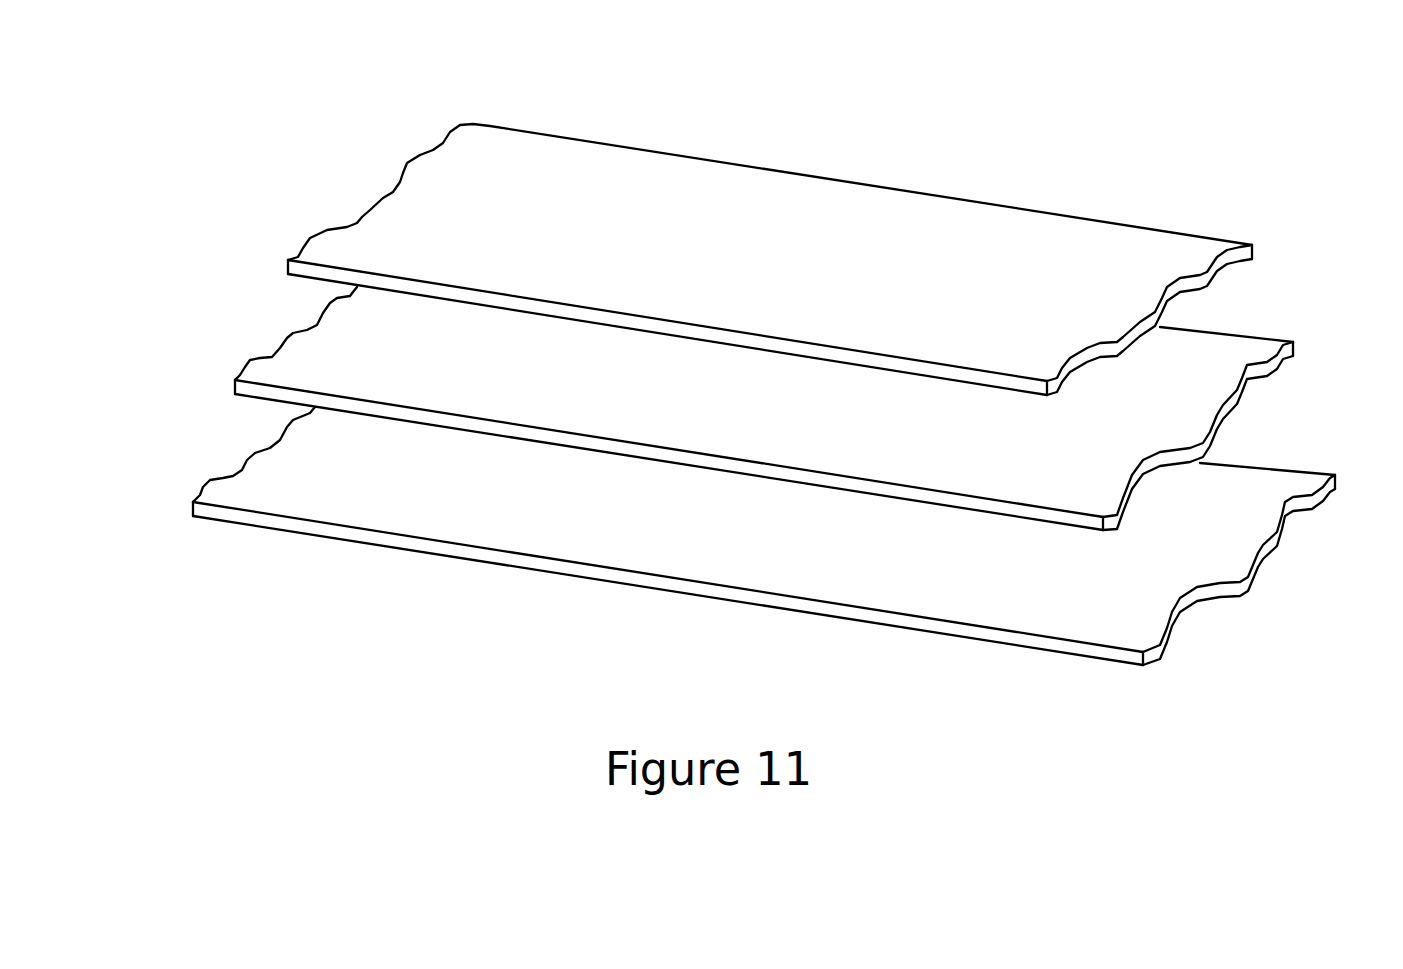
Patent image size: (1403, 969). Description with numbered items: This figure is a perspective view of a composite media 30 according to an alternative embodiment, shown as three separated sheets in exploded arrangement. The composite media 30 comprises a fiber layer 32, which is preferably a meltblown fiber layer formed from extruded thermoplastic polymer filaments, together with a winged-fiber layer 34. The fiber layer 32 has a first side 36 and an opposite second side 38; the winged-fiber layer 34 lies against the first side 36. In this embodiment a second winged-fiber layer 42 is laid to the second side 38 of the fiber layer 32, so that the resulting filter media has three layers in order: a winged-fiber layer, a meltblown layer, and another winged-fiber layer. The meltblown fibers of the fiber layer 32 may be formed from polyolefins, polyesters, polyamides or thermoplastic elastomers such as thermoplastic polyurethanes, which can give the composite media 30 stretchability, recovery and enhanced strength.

The composite media 30 is at (1094, 164).
The fiber layer 32 is at (1225, 354).
The winged-fiber layer 34 is at (482, 166).
The first side 36 is at (358, 327).
The second side 38 is at (1225, 420).
The second winged-fiber layer 42 is at (620, 542).